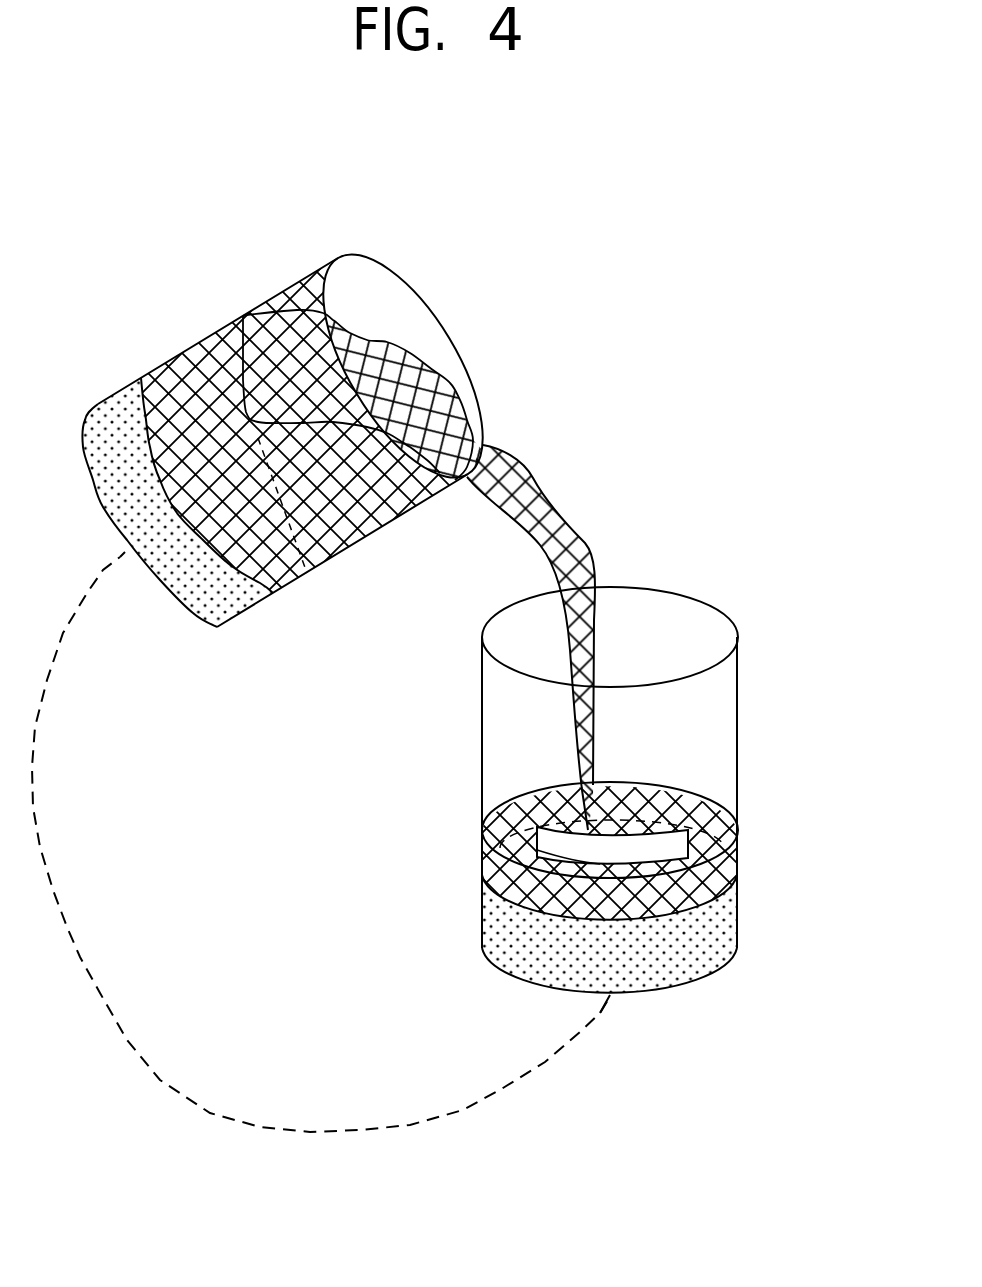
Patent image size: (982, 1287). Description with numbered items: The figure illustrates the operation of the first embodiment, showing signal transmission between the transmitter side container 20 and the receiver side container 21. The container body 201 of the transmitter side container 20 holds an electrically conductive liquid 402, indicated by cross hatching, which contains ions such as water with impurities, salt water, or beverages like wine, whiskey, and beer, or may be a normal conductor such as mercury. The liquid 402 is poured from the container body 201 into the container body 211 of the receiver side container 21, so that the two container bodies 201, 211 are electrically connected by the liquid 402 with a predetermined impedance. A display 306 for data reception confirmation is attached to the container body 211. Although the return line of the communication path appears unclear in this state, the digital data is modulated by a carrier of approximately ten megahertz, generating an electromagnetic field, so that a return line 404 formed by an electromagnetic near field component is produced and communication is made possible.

The transmitter side container 20 is at (310, 389).
The container body 201 is at (393, 310).
The electrically conductive liquid 402 is at (535, 466).
The container body 211 is at (733, 697).
The display 306 is at (652, 828).
The receiver side container 21 is at (676, 790).
The return line 404 is at (83, 955).